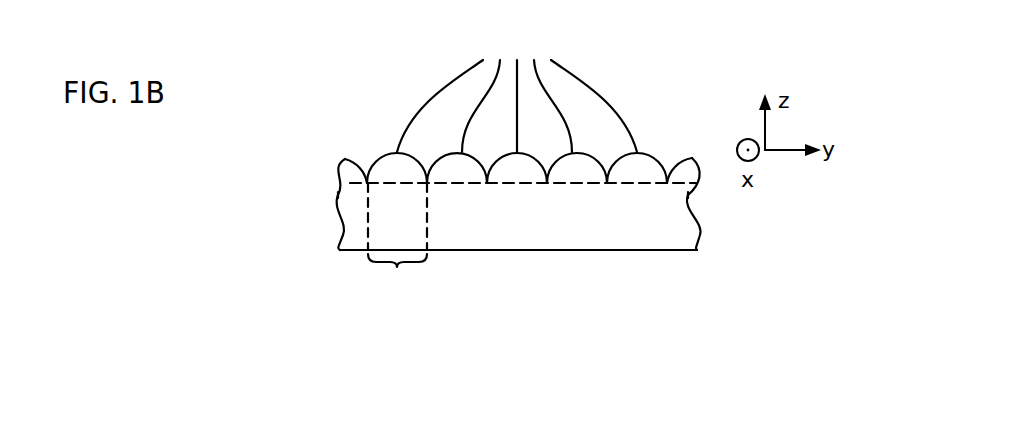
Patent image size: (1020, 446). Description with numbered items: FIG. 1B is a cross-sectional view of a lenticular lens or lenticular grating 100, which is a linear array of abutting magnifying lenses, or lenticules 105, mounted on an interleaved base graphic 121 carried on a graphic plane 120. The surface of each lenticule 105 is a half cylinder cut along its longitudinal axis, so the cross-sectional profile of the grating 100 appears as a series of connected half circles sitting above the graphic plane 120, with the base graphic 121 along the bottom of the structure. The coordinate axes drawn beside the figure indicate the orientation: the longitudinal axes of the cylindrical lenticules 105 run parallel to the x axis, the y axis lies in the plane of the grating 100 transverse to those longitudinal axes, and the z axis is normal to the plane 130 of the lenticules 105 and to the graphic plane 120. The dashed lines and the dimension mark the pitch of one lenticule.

The lenticular grating 100 is at (611, 273).
The lenticules 105 is at (517, 89).
The graphic plane 120 is at (328, 250).
The interleaved base graphic 121 is at (512, 257).
The plane of the lenticules 130 is at (327, 187).